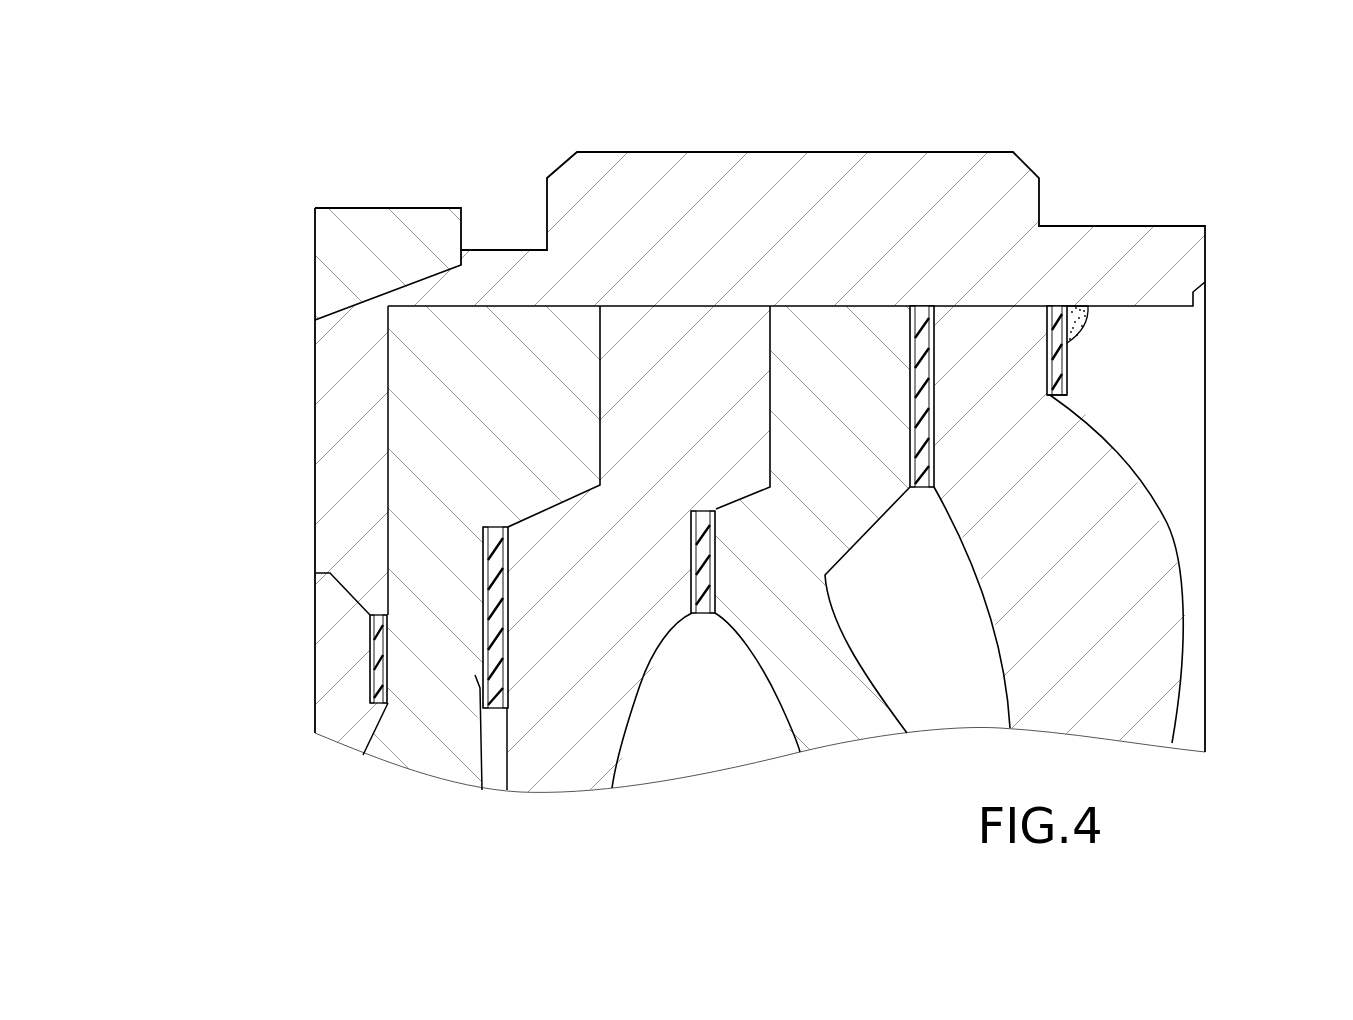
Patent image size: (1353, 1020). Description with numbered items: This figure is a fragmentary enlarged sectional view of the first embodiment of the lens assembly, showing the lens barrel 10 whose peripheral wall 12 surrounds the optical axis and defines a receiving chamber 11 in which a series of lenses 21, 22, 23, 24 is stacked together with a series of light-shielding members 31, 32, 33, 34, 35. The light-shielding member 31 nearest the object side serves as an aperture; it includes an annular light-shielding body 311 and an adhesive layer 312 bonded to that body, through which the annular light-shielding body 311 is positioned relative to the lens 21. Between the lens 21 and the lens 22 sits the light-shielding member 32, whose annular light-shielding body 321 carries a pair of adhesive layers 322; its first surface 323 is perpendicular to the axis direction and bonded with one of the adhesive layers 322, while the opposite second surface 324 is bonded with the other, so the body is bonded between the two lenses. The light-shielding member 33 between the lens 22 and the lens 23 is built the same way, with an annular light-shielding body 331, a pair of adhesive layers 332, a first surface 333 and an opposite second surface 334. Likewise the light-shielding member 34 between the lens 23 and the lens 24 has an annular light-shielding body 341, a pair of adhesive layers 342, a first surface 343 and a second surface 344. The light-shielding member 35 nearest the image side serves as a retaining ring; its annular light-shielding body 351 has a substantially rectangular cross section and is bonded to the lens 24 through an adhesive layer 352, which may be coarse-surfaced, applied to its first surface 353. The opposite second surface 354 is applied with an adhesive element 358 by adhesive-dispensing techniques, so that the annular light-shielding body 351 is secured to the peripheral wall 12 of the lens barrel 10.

The lens barrel 10 is at (1023, 142).
The receiving chamber 11 is at (1122, 320).
The peripheral wall 12 is at (775, 167).
The lens 21 is at (382, 752).
The lens 22 is at (590, 757).
The lens 23 is at (857, 720).
The lens 24 is at (1177, 598).
The light-shielding member 31 is at (289, 650).
The annular light-shielding body 311 is at (370, 648).
The adhesive layer 312 is at (370, 617).
The light-shielding member 32 is at (480, 486).
The annular light-shielding body 321 is at (497, 522).
The adhesive layers 322 is at (484, 540).
The first surface 323 is at (490, 706).
The second surface 324 is at (503, 708).
The light-shielding member 33 is at (702, 439).
The annular light-shielding body 331 is at (702, 520).
The adhesive layers 332 is at (695, 520).
The first surface 333 is at (697, 617).
The second surface 334 is at (710, 617).
The light-shielding member 34 is at (913, 396).
The annular light-shielding body 341 is at (912, 333).
The adhesive layers 342 is at (910, 372).
The first surface 343 is at (918, 490).
The second surface 344 is at (928, 490).
The light-shielding member 35 is at (1179, 284).
The annular light-shielding body 351 is at (1067, 365).
The adhesive layer 352 is at (1067, 377).
The first surface 353 is at (1067, 390).
The second surface 354 is at (1067, 350).
The adhesive element 358 is at (1078, 337).